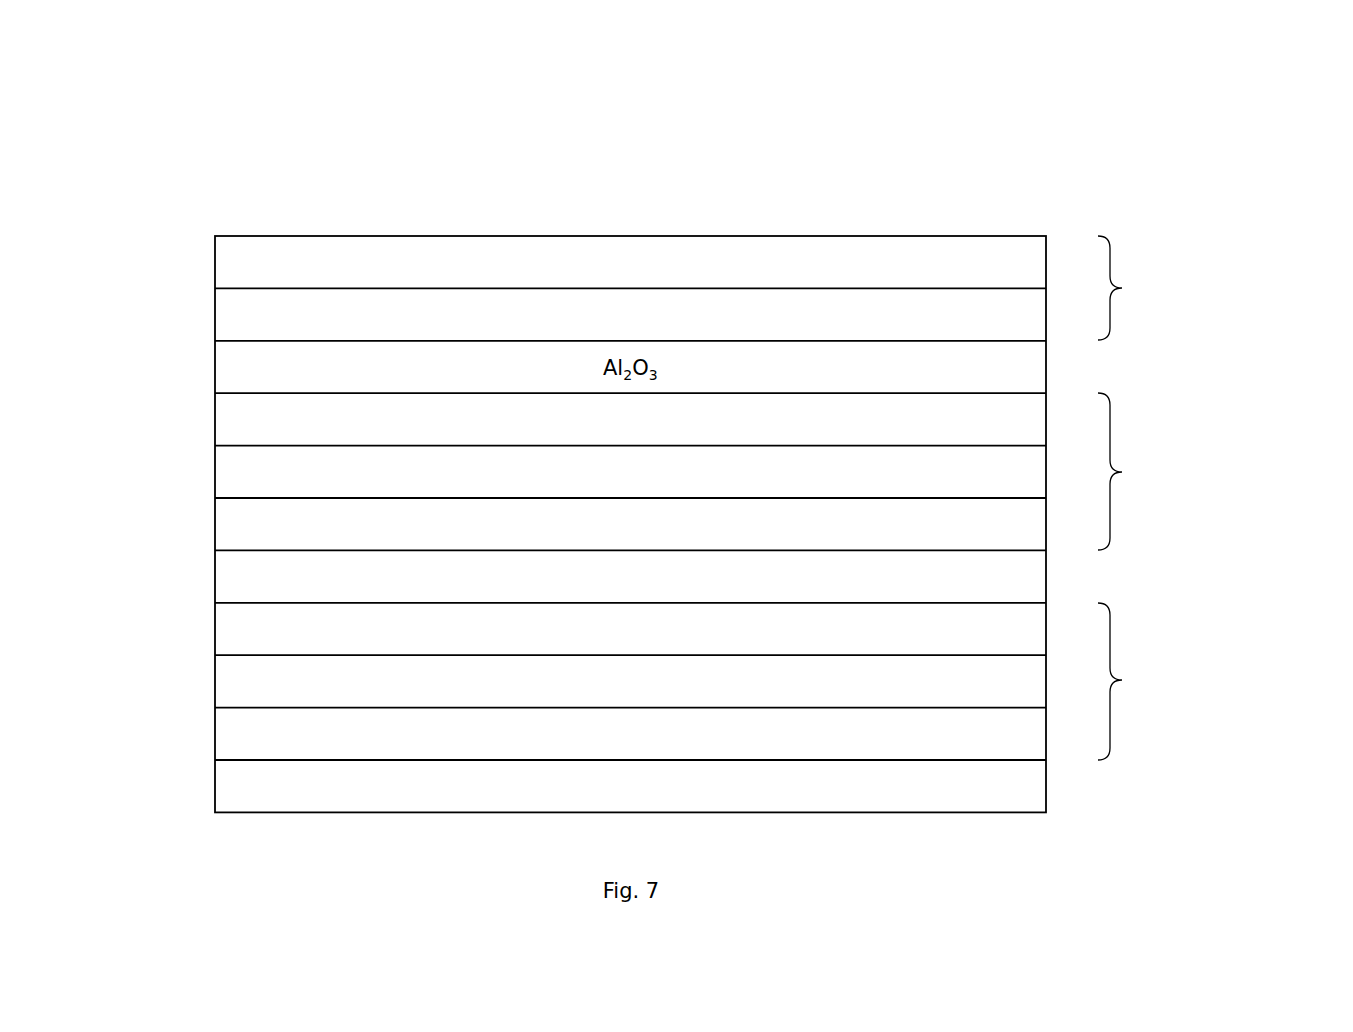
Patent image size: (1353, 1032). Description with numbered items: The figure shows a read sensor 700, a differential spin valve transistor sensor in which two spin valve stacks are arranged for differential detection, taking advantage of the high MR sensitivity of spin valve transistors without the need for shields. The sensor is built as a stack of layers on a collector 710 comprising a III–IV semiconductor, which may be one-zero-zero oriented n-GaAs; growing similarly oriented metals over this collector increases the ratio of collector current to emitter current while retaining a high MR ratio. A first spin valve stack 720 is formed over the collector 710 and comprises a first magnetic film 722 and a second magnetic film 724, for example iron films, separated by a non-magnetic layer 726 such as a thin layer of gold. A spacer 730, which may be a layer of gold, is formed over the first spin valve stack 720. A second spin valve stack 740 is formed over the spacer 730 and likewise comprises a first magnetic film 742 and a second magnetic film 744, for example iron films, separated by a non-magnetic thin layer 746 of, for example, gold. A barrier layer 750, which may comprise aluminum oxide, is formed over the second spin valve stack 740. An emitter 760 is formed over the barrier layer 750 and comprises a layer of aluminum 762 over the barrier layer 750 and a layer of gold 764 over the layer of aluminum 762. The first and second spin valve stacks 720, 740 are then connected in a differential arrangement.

The read sensor 700 is at (138, 145).
The collector 710 is at (1163, 787).
The first spin valve stack 720 is at (1202, 667).
The first magnetic film 722 is at (630, 734).
The second magnetic film 724 is at (630, 629).
The non-magnetic layer 726 is at (630, 681).
The spacer 730 is at (1165, 577).
The second spin valve stack 740 is at (1202, 472).
The first magnetic film 742 is at (630, 524).
The second magnetic film 744 is at (630, 419).
The non-magnetic thin layer 746 is at (630, 472).
The barrier layer 750 is at (1137, 367).
The emitter 760 is at (1268, 288).
The layer of aluminum 762 is at (630, 314).
The layer of gold 764 is at (630, 262).